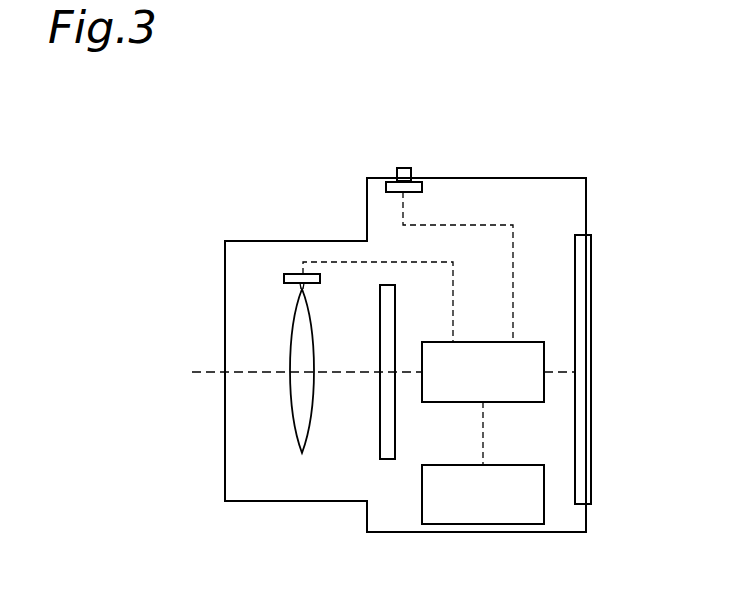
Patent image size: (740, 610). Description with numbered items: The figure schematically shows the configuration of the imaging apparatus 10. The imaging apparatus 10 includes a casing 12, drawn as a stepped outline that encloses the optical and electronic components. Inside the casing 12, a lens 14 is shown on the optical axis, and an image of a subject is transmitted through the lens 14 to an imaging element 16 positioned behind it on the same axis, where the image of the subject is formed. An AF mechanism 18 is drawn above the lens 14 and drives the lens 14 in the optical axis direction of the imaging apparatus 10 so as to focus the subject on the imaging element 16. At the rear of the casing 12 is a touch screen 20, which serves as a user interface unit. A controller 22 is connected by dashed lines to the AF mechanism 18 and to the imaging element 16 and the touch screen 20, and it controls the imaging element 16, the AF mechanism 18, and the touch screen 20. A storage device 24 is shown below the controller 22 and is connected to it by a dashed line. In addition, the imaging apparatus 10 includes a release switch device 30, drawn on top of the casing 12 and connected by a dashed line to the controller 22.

The imaging apparatus 10 is at (183, 243).
The casing 12 is at (278, 241).
The lens 14 is at (296, 430).
The imaging element 16 is at (383, 441).
The AF mechanism 18 is at (320, 277).
The touch screen 20 is at (586, 365).
The controller 22 is at (498, 385).
The storage device 24 is at (498, 509).
The release switch device 30 is at (412, 167).